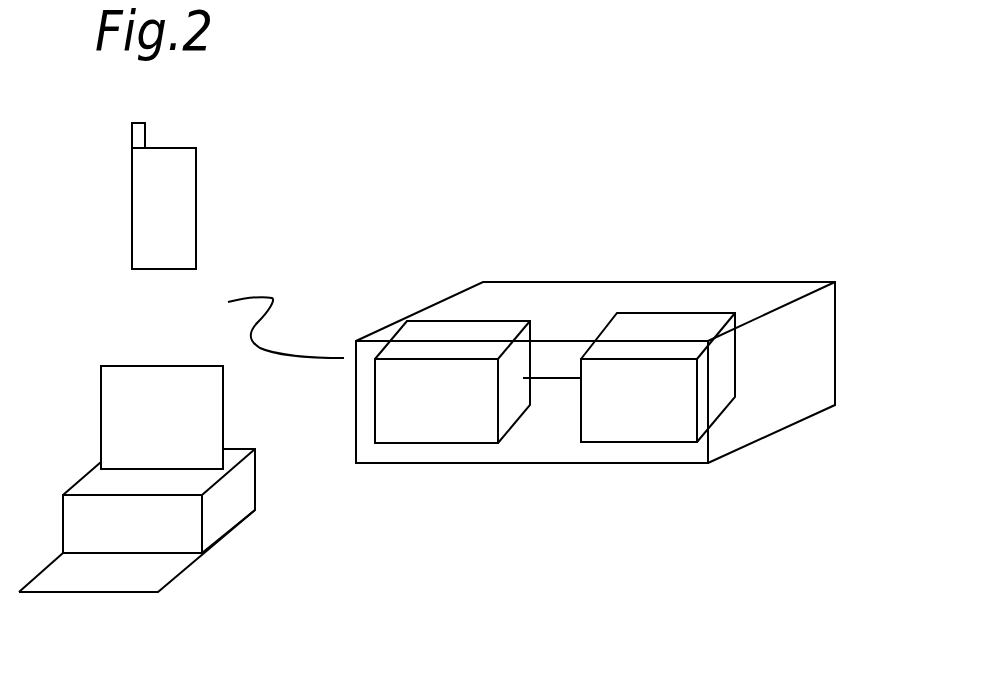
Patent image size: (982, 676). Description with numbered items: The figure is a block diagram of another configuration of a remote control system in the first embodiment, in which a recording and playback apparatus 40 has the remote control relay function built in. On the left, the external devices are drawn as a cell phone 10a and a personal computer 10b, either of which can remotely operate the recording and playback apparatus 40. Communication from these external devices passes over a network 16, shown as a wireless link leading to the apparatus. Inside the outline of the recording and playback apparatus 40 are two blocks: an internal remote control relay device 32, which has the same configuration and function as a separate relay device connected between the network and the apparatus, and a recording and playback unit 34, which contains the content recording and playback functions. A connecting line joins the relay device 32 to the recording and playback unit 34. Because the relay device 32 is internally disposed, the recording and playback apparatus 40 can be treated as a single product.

The cell phone 10a is at (196, 187).
The personal computer 10b is at (235, 513).
The network 16 is at (312, 355).
The internal remote control relay device 32 is at (425, 443).
The recording and playback unit 34 is at (622, 442).
The recording and playback apparatus 40 is at (623, 282).